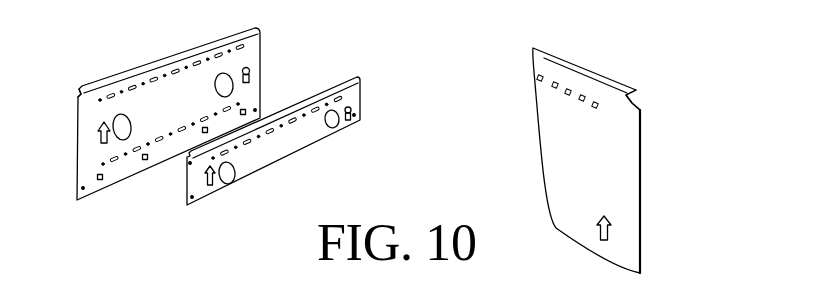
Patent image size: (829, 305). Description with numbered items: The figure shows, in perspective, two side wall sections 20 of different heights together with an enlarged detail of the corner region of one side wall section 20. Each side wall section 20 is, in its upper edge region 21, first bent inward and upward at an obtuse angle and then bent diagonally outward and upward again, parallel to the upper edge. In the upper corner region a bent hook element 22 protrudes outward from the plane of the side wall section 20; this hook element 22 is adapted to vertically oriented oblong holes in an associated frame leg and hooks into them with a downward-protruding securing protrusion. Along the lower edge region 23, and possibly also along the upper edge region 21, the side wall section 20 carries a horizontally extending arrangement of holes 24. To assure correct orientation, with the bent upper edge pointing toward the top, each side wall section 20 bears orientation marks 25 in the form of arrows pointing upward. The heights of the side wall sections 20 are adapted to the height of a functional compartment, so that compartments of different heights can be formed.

The side wall section 20 is at (173, 196).
The upper edge region 21 is at (152, 62).
The hook element 22 is at (78, 100).
The lower edge region 23 is at (96, 183).
The arrangement of holes 24 is at (247, 110).
The orientation mark 25 is at (250, 73).